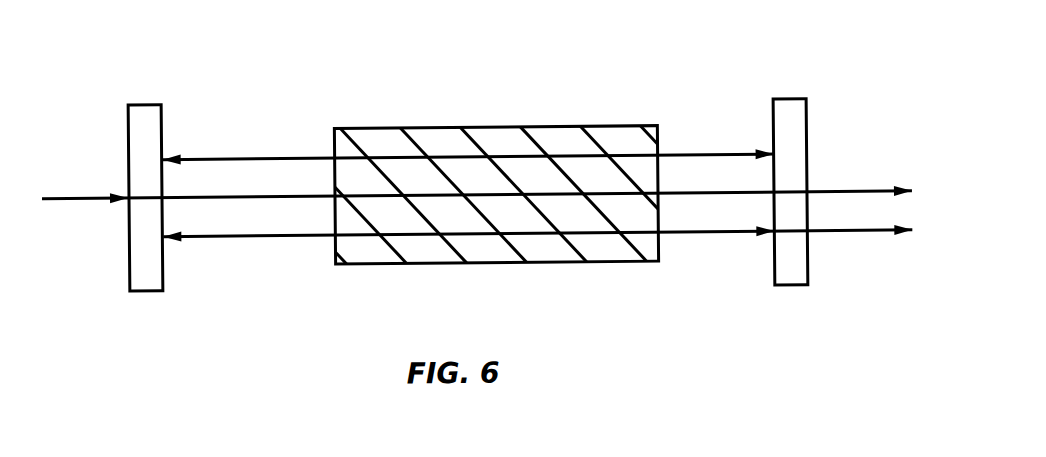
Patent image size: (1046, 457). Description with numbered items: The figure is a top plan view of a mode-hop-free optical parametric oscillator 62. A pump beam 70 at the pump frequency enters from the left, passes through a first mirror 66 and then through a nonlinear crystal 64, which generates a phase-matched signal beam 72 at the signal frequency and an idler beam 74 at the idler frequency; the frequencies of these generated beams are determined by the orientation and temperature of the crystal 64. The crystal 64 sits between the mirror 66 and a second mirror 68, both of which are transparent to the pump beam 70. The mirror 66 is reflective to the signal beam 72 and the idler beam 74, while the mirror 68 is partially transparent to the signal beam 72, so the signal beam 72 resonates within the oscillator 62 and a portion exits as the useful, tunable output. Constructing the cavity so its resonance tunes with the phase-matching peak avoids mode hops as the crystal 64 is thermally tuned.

The optical parametric oscillator 62 is at (476, 186).
The nonlinear crystal 64 is at (558, 269).
The mirror 66 is at (157, 293).
The mirror 68 is at (808, 261).
The pump beam 70 is at (68, 200).
The signal beam 72 is at (267, 239).
The idler beam 74 is at (258, 158).